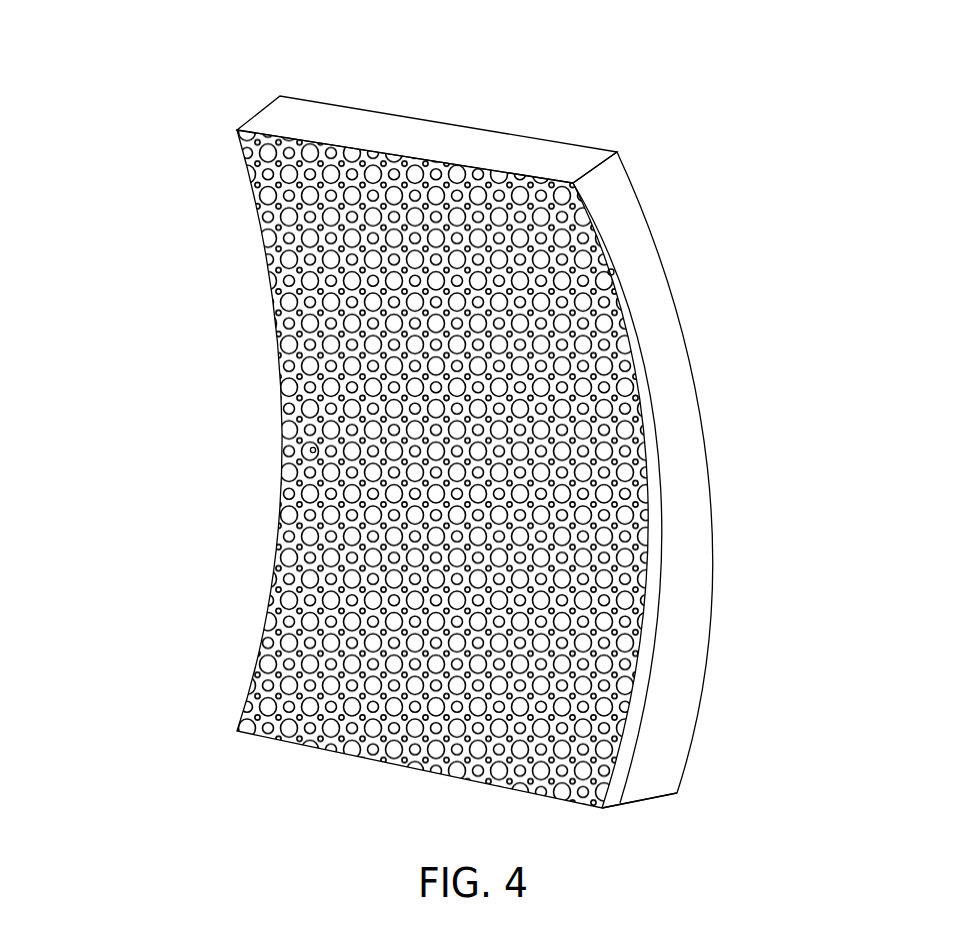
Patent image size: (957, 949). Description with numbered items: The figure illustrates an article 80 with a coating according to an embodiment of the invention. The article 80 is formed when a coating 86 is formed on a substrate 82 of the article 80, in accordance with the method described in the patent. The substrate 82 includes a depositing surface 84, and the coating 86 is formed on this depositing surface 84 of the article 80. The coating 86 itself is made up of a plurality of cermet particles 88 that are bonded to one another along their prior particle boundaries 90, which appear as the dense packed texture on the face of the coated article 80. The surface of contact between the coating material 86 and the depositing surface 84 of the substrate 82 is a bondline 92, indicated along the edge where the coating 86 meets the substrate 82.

The article 80 is at (117, 81).
The substrate 82 is at (682, 678).
The depositing surface 84 is at (593, 210).
The coating 86 is at (610, 797).
The cermet particles 88 is at (282, 372).
The prior particle boundaries 90 is at (310, 452).
The bondline 92 is at (613, 276).